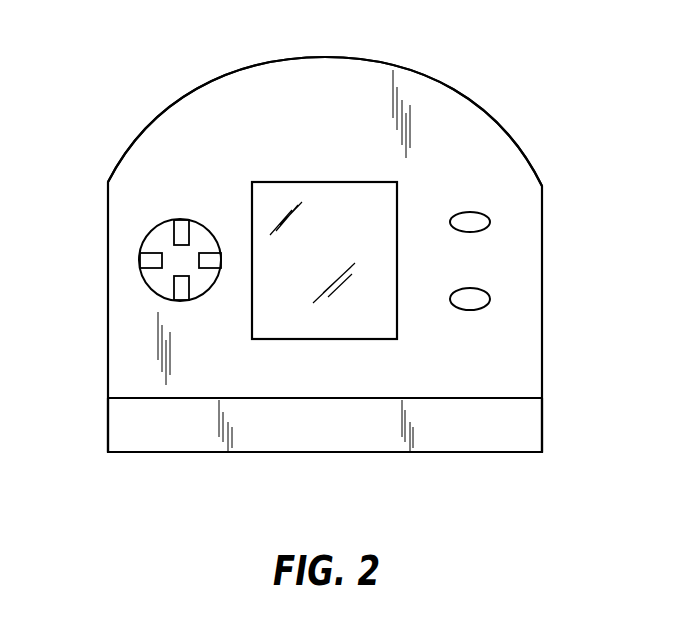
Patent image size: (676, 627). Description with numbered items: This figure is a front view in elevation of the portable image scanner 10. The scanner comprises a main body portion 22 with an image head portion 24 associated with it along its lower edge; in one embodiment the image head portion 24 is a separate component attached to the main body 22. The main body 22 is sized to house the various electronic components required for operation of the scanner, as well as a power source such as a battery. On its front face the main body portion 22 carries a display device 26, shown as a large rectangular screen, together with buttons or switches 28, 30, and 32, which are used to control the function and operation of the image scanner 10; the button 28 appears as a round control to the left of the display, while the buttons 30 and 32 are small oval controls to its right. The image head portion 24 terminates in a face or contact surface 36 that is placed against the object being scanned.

The portable image scanner 10 is at (122, 70).
The main body portion 22 is at (323, 56).
The image head portion 24 is at (543, 428).
The display device 26 is at (327, 182).
The button or switch 28 is at (197, 219).
The button or switch 30 is at (470, 211).
The button or switch 32 is at (470, 310).
The face or contact surface 36 is at (132, 453).